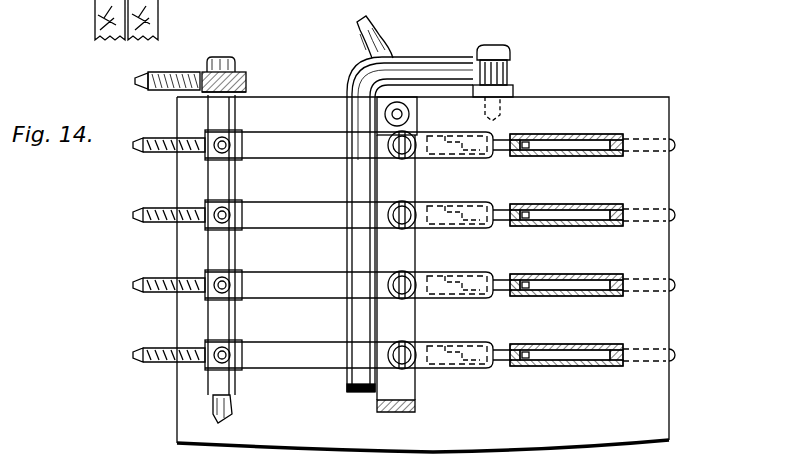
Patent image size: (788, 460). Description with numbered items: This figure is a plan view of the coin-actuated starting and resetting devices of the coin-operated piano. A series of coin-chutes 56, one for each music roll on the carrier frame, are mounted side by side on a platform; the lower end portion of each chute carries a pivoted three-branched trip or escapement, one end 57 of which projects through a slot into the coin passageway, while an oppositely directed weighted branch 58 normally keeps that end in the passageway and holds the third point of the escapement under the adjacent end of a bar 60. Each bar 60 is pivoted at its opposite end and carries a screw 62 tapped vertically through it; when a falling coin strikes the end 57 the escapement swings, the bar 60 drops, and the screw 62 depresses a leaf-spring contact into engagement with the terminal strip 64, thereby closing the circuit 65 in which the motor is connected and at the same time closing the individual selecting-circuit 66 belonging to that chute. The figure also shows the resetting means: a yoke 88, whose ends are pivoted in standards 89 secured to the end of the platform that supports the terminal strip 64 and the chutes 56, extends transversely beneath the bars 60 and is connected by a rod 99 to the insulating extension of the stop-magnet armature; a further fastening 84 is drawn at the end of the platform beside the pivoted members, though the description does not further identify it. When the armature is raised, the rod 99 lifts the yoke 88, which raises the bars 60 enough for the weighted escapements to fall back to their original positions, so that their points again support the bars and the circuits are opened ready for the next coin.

The coin-chute 56 is at (572, 168).
The end of escapement 57 is at (545, 312).
The weighted branch of escapement 58 is at (491, 250).
The bar 60 is at (300, 163).
The screw 62 is at (435, 172).
The terminal strip 64 is at (415, 326).
The circuit 65 is at (390, 42).
The selecting-circuit 66 is at (130, 214).
The bolt 84 is at (146, 79).
The yoke 88 is at (352, 80).
The standards 89 is at (506, 95).
The rod 99 is at (347, 255).